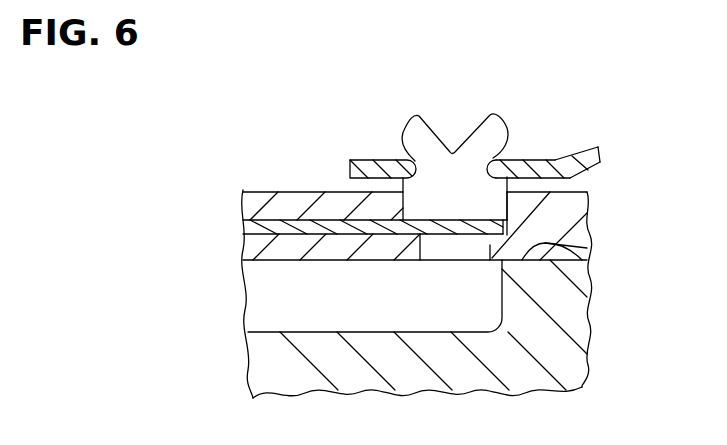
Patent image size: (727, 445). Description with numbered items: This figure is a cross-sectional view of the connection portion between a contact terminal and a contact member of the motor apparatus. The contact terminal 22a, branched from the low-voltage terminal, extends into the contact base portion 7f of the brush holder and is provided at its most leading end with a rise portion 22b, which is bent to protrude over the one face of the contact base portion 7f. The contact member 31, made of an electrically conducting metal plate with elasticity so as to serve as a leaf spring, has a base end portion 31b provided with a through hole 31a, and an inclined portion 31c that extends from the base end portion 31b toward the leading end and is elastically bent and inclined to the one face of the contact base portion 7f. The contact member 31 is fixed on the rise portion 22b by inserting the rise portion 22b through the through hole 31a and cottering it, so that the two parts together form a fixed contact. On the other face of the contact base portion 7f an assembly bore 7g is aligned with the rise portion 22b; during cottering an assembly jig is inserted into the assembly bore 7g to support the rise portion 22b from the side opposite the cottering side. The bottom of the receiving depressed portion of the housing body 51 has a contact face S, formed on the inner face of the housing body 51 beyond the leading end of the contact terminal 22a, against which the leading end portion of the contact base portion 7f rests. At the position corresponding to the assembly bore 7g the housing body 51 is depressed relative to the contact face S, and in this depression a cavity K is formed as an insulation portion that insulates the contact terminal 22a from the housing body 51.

The contact base portion 7f is at (250, 196).
The assembly bore 7g is at (489, 244).
The contact terminal 22a is at (275, 224).
The rise portion 22b is at (468, 162).
The contact member 31 is at (573, 136).
The through hole 31a is at (502, 154).
The base end portion 31b is at (367, 160).
The inclined portion 31c is at (575, 156).
The housing body 51 is at (580, 320).
The contact face S is at (588, 250).
The cavity K is at (384, 311).